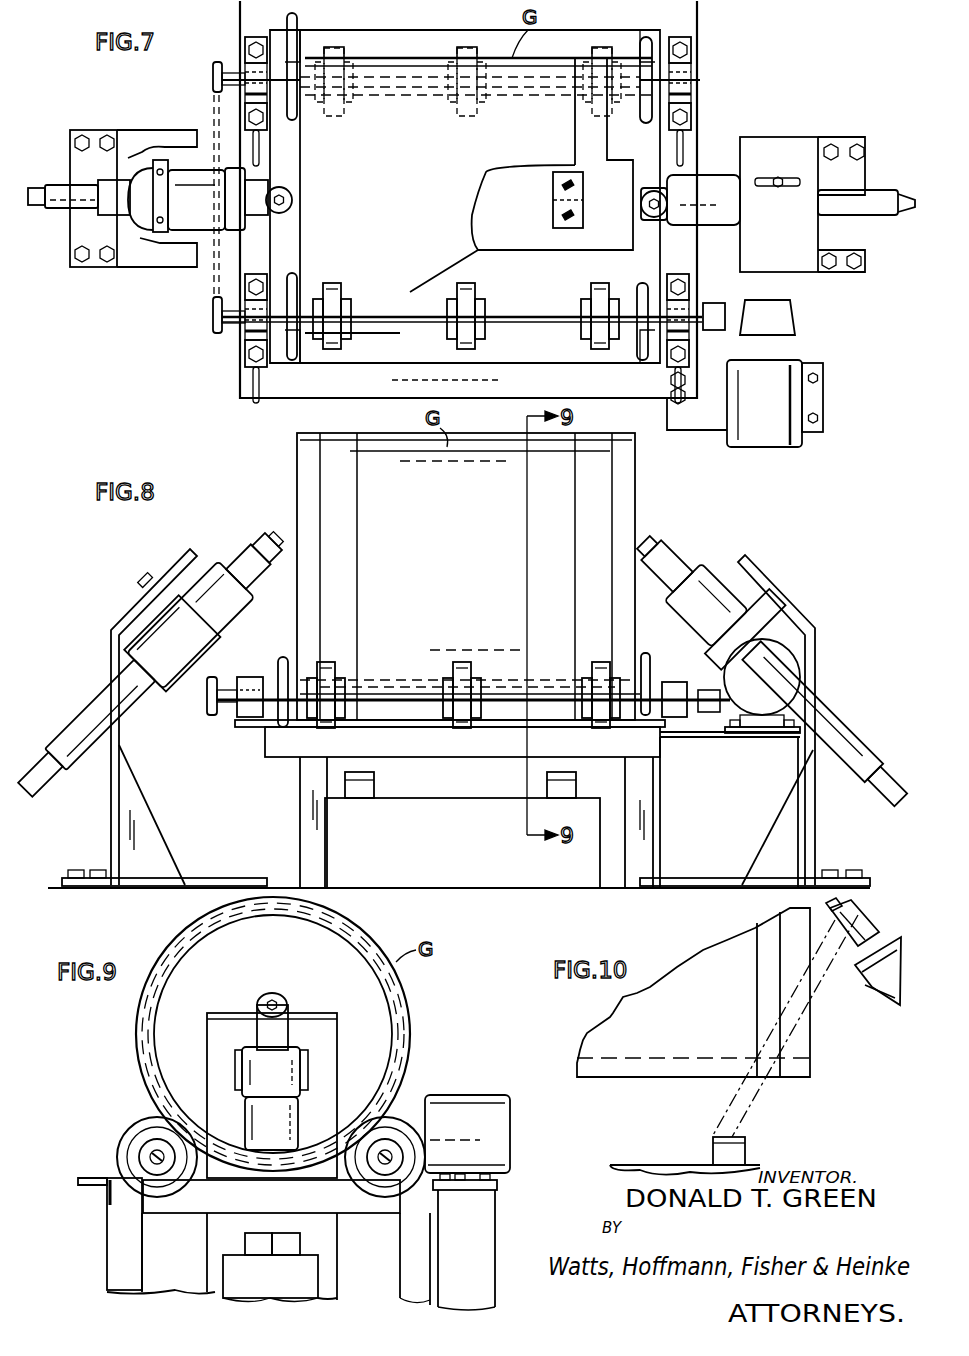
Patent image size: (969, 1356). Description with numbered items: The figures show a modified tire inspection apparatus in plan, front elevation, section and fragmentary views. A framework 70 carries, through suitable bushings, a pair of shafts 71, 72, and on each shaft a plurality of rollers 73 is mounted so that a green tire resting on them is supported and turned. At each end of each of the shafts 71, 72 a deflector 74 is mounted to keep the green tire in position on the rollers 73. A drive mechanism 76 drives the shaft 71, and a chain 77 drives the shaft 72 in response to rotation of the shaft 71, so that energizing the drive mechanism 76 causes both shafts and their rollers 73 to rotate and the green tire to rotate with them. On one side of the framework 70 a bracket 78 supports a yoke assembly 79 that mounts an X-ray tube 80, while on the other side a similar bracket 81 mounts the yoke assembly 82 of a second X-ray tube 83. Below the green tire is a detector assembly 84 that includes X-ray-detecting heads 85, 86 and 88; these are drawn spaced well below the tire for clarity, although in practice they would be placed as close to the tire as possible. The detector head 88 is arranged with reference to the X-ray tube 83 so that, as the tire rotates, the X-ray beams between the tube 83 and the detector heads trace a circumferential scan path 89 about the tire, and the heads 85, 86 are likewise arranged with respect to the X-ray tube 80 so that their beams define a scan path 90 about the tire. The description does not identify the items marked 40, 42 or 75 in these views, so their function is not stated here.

In FIG. 8, the support table 40 is at (265, 748).
In FIG. 7, the bearing block 42 is at (672, 80).
In FIG. 7, the framework 70 is at (697, 17).
In FIG. 9, the framework 70 is at (105, 1198).
In FIG. 7, the shaft 71 is at (540, 324).
In FIG. 8, the shaft 71 is at (397, 704).
In FIG. 9, the shaft 71 is at (372, 1170).
In FIG. 9, the shaft 72 is at (165, 1163).
In FIG. 7, the rollers 73 is at (465, 52).
In FIG. 8, the rollers 73 is at (330, 664).
In FIG. 9, the rollers 73 is at (130, 1145).
In FIG. 7, the deflector 74 is at (302, 42).
In FIG. 8, the deflector 74 is at (279, 672).
In FIG. 9, the deflector 74 is at (140, 1120).
In FIG. 10, the plate 75 is at (630, 1068).
In FIG. 7, the drive mechanism 76 is at (760, 432).
In FIG. 8, the drive mechanism 76 is at (785, 672).
In FIG. 9, the drive mechanism 76 is at (500, 1120).
In FIG. 7, the chain 77 is at (213, 312).
In FIG. 8, the chain 77 is at (213, 716).
In FIG. 7, the bracket 78 is at (140, 135).
In FIG. 8, the bracket 78 is at (111, 672).
In FIG. 7, the yoke assembly 79 is at (205, 225).
In FIG. 8, the yoke assembly 79 is at (243, 590).
In FIG. 7, the X-ray tube 80 is at (270, 212).
In FIG. 8, the X-ray tube 80 is at (258, 540).
In FIG. 7, the bracket 81 is at (775, 147).
In FIG. 8, the bracket 81 is at (805, 622).
In FIG. 9, the bracket 81 is at (222, 1043).
In FIG. 7, the yoke assembly 82 is at (722, 226).
In FIG. 8, the yoke assembly 82 is at (700, 612).
In FIG. 9, the yoke assembly 82 is at (293, 1075).
In FIG. 10, the yoke assembly 82 is at (873, 988).
In FIG. 7, the X-ray tube 83 is at (655, 217).
In FIG. 8, the X-ray tube 83 is at (672, 548).
In FIG. 9, the X-ray tube 83 is at (290, 1022).
In FIG. 10, the X-ray tube 83 is at (860, 915).
In FIG. 7, the detector assembly 84 is at (593, 178).
In FIG. 8, the detector assembly 84 is at (462, 843).
In FIG. 9, the detector assembly 84 is at (270, 1278).
In FIG. 10, the detector assembly 84 is at (636, 1160).
In FIG. 8, the X-ray-detecting head 85 is at (345, 782).
In FIG. 9, the X-ray-detecting head 85 is at (245, 1243).
In FIG. 8, the X-ray-detecting head 86 is at (374, 782).
In FIG. 7, the X-ray-detecting head 88 is at (570, 228).
In FIG. 8, the X-ray-detecting head 88 is at (576, 782).
In FIG. 9, the X-ray-detecting head 88 is at (292, 1243).
In FIG. 10, the X-ray-detecting head 88 is at (745, 1148).
In FIG. 7, the circumferential scan path 89 is at (590, 124).
In FIG. 8, the circumferential scan path 89 is at (595, 505).
In FIG. 10, the circumferential scan path 89 is at (767, 985).
In FIG. 8, the scan path 90 is at (350, 555).